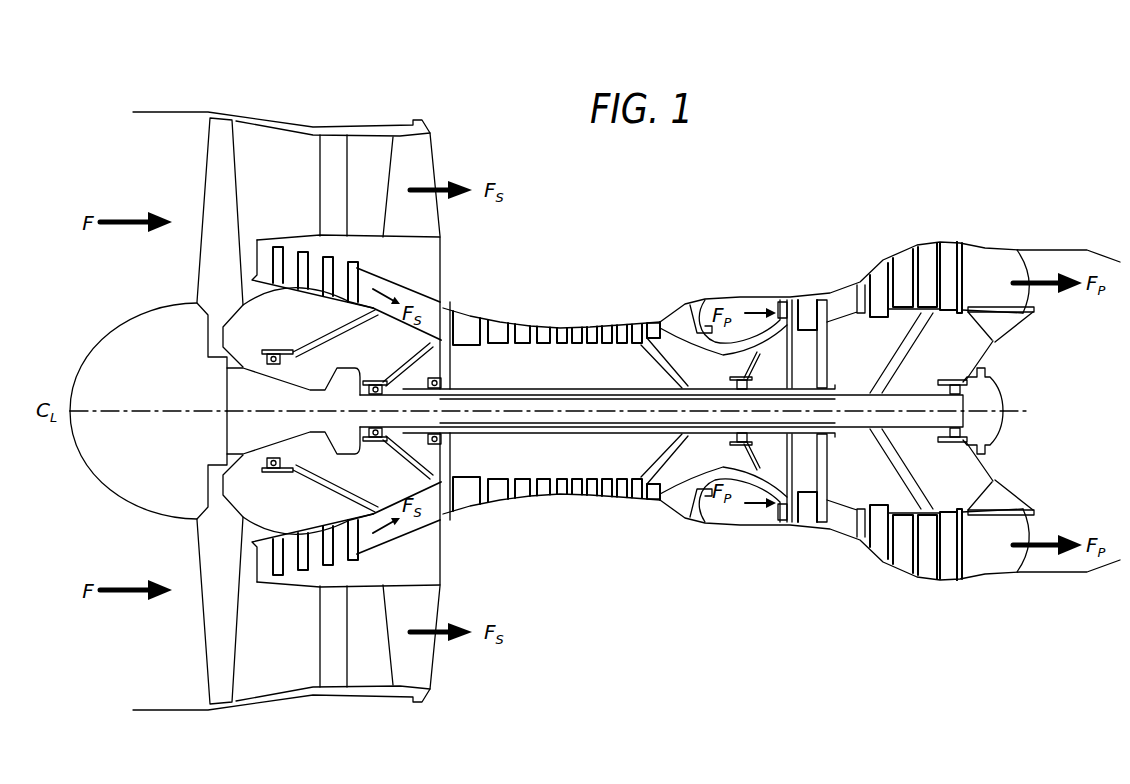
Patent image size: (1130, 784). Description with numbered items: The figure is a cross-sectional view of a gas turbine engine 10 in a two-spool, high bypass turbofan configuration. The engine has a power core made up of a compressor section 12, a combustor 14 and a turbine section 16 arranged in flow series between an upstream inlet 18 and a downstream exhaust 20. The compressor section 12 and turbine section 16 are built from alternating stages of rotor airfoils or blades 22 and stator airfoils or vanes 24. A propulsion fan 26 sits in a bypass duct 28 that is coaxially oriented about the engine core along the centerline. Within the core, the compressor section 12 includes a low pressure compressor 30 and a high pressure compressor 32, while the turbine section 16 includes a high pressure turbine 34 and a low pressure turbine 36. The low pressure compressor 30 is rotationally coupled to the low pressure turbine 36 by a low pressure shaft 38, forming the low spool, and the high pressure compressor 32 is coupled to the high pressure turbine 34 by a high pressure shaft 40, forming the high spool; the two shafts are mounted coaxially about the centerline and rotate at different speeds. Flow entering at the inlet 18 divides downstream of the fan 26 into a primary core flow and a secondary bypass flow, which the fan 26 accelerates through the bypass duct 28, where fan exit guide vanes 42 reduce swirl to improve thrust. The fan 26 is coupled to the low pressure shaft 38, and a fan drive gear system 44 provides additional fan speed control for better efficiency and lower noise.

The gas turbine engine 10 is at (106, 86).
The compressor section 12 is at (652, 720).
The combustor 14 is at (745, 300).
The turbine section 16 is at (975, 618).
The upstream inlet 18 is at (98, 306).
The downstream exhaust 20 is at (1046, 366).
The rotor airfoils 22 is at (490, 318).
The stator airfoils 24 is at (524, 318).
The propulsion fan 26 is at (217, 188).
The bypass duct 28 is at (273, 190).
The low pressure compressor 30 is at (308, 582).
The high pressure compressor 32 is at (563, 509).
The high pressure turbine 34 is at (813, 530).
The low pressure turbine 36 is at (879, 566).
The low pressure shaft 38 is at (590, 422).
The high pressure shaft 40 is at (662, 440).
The fan exit guide vanes 42 is at (330, 144).
The fan drive gear system 44 is at (346, 366).